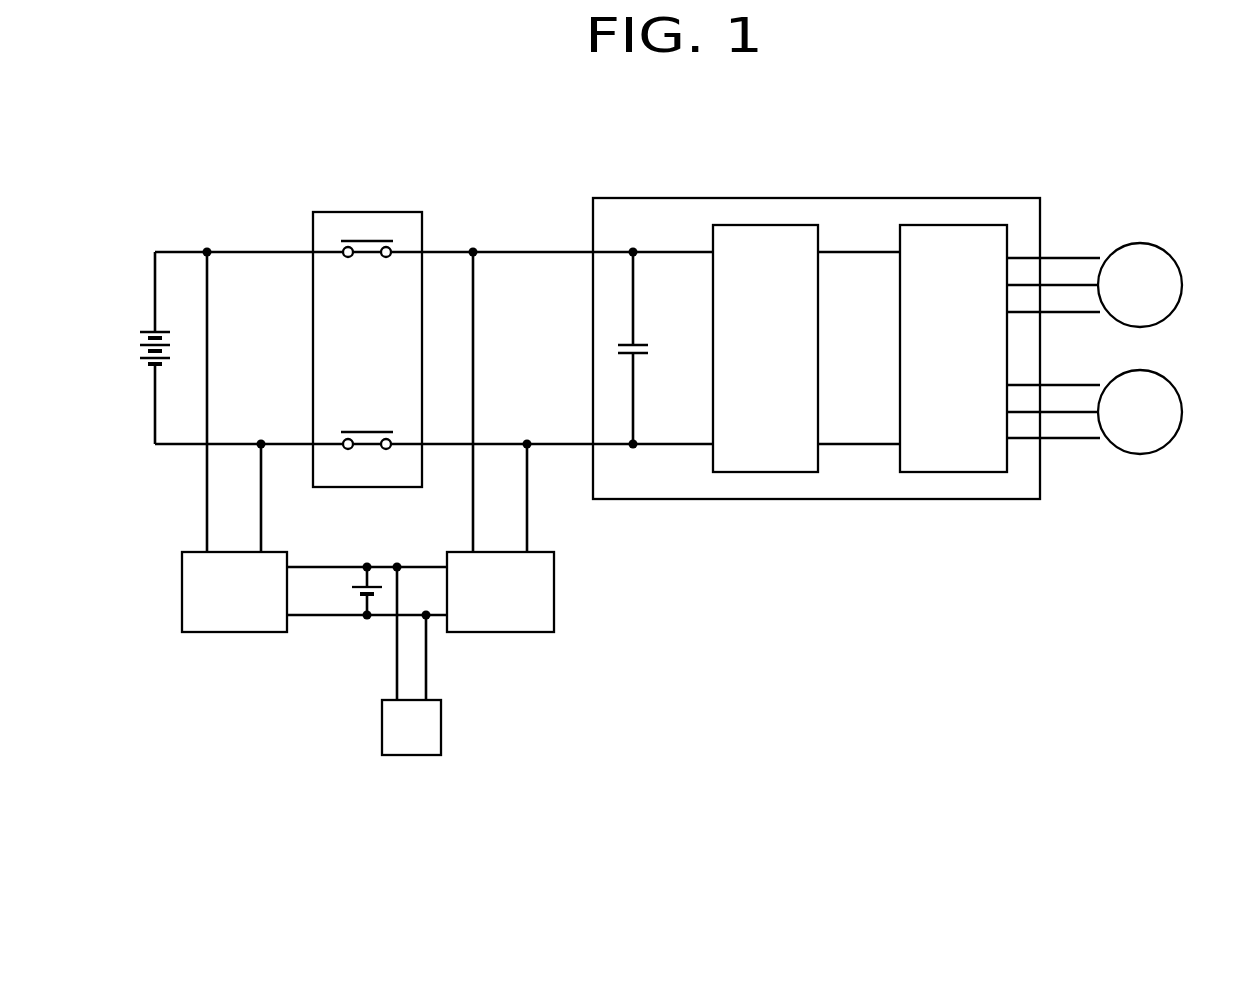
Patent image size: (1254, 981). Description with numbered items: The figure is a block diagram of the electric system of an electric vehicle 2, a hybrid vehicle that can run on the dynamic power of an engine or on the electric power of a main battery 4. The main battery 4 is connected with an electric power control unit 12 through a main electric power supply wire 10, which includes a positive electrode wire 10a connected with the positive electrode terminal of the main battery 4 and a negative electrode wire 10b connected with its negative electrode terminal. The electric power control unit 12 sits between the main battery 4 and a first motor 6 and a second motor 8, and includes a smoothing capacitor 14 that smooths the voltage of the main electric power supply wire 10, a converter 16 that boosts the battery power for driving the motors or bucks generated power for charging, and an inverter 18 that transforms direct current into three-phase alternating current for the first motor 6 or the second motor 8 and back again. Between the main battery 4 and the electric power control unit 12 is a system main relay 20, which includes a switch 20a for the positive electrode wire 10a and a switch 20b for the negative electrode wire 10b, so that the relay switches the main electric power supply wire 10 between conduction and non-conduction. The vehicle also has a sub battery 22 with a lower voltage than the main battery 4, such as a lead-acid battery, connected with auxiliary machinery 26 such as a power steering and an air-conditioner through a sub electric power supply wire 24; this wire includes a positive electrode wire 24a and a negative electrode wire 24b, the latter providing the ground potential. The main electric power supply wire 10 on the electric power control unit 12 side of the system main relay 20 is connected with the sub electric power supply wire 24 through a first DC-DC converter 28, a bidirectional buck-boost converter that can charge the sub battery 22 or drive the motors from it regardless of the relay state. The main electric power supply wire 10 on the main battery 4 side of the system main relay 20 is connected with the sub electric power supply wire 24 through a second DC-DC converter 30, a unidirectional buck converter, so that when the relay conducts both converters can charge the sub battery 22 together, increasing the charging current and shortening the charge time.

The electric vehicle 2 is at (727, 632).
The main battery 4 is at (153, 330).
The first motor 6 is at (1183, 282).
The second motor 8 is at (1183, 412).
The main electric power supply wire 10 is at (560, 85).
The positive electrode wire 10a is at (240, 252).
The negative electrode wire 10b is at (235, 444).
The electric power control unit 12 is at (852, 499).
The smoothing capacitor 14 is at (641, 357).
The converter 16 is at (767, 472).
The inverter 18 is at (952, 472).
The system main relay 20 is at (386, 212).
The switch 20a is at (358, 241).
The switch 20b is at (346, 432).
The sub battery 22 is at (373, 586).
The sub electric power supply wire 24 is at (262, 715).
The positive electrode wire 24a is at (307, 568).
The negative electrode wire 24b is at (343, 617).
The auxiliary machinery 26 is at (411, 755).
The first DC-DC converter 28 is at (498, 633).
The second DC-DC converter 30 is at (222, 633).